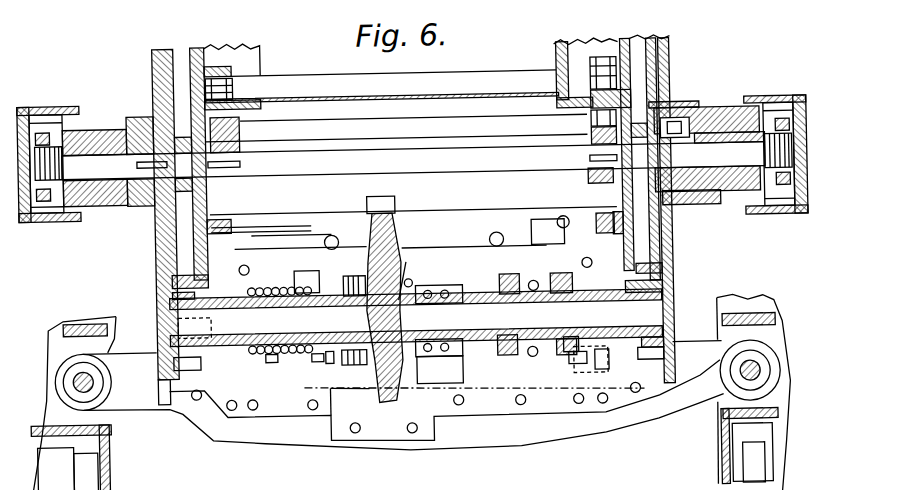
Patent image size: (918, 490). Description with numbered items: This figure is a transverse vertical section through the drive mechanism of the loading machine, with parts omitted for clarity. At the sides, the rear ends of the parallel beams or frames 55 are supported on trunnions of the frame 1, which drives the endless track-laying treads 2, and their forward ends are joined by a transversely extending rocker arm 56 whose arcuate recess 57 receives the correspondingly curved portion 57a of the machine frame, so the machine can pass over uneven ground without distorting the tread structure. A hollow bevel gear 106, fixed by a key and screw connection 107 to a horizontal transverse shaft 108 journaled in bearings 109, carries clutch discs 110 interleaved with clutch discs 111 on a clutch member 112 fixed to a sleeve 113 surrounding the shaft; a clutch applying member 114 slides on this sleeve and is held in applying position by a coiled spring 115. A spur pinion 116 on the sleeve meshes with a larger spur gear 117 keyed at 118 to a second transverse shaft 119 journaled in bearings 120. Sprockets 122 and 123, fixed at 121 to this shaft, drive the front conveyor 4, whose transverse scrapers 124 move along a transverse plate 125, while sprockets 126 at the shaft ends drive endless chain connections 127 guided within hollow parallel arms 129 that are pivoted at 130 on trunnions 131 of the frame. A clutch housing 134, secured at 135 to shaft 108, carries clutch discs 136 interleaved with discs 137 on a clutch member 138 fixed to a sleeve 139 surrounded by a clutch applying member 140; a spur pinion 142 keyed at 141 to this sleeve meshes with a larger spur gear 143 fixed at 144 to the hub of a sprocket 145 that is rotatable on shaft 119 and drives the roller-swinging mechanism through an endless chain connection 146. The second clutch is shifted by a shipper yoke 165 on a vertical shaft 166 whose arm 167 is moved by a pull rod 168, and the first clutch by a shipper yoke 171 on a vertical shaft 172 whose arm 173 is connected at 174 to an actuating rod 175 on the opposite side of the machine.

The frame 1 is at (156, 50).
The endless track-laying treads 2 is at (104, 464).
The front conveyor 4 is at (610, 47).
The parallel beams or frames 55 is at (60, 325).
The rocker arm 56 is at (210, 433).
The arcuate recess 57 is at (396, 414).
The curved portion 57a is at (436, 418).
The bevel gear 106 is at (383, 243).
The key and screw connection 107 is at (406, 280).
The shaft 108 is at (186, 341).
The bearings 109 is at (168, 298).
The clutch discs 110 is at (349, 272).
The clutch discs 111 is at (372, 242).
The clutch member 112 is at (333, 364).
The sleeve 113 is at (266, 360).
The clutch applying member 114 is at (326, 362).
The coiled spring 115 is at (279, 352).
The spur pinion 116 is at (185, 366).
The spur gear 117 is at (172, 273).
The key 118 is at (150, 200).
The shaft 119 is at (306, 153).
The bearings 120 is at (232, 133).
The key 121 is at (590, 161).
The sprocket 122 is at (231, 117).
The sprocket 123 is at (589, 137).
The transverse scrapers 124 is at (447, 80).
The transverse plate 125 is at (496, 95).
The sprockets 126 is at (46, 133).
The endless chain connections 127 is at (55, 216).
The hollow parallel arms 129 is at (42, 216).
The pivot 130 is at (79, 124).
The trunnions 131 is at (102, 136).
The clutch housing 134 is at (444, 287).
The key and screw connection 135 is at (478, 300).
The clutch discs 136 is at (506, 357).
The clutch discs 137 is at (516, 348).
The clutch member 138 is at (496, 292).
The sleeve 139 is at (613, 362).
The clutch applying member 140 is at (573, 360).
The key 141 is at (660, 273).
The spur pinion 142 is at (645, 357).
The spur gear 143 is at (670, 253).
The fastening 144 is at (661, 115).
The sprocket 145 is at (696, 123).
The endless chain connection 146 is at (691, 116).
The shipper yoke 165 is at (560, 348).
The vertical shaft 166 is at (542, 273).
The crank or arm 167 is at (560, 221).
The actuating or pull rod 168 is at (622, 226).
The shipper yoke 171 is at (312, 360).
The vertical shaft 172 is at (306, 261).
The crank or arm 173 is at (273, 225).
The connection 174 is at (217, 216).
The actuating rod 175 is at (203, 224).